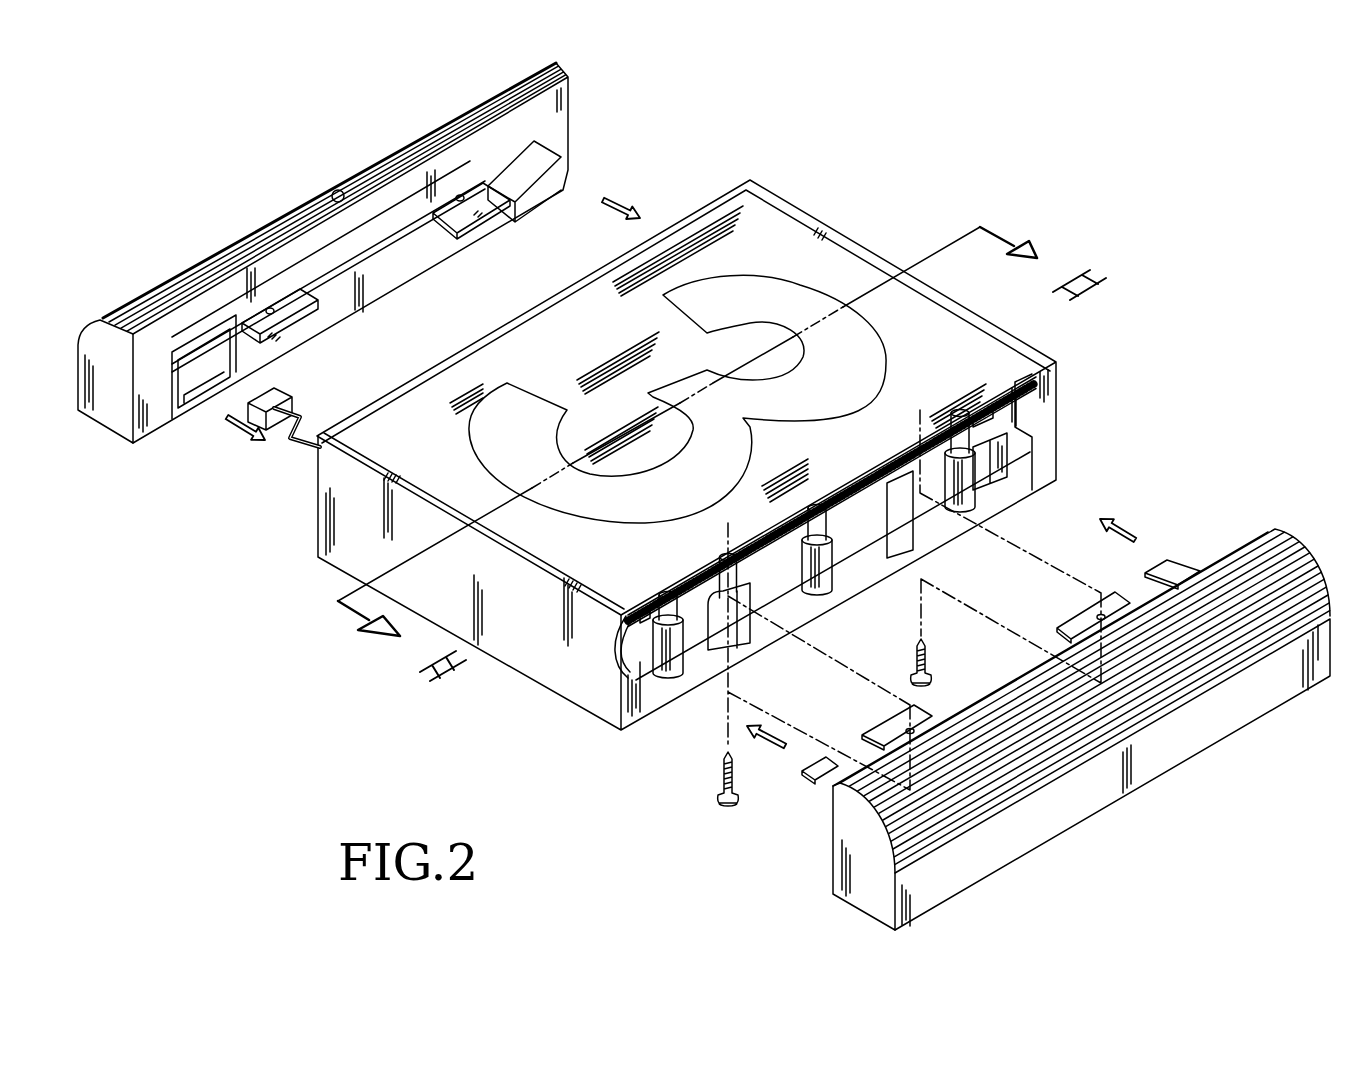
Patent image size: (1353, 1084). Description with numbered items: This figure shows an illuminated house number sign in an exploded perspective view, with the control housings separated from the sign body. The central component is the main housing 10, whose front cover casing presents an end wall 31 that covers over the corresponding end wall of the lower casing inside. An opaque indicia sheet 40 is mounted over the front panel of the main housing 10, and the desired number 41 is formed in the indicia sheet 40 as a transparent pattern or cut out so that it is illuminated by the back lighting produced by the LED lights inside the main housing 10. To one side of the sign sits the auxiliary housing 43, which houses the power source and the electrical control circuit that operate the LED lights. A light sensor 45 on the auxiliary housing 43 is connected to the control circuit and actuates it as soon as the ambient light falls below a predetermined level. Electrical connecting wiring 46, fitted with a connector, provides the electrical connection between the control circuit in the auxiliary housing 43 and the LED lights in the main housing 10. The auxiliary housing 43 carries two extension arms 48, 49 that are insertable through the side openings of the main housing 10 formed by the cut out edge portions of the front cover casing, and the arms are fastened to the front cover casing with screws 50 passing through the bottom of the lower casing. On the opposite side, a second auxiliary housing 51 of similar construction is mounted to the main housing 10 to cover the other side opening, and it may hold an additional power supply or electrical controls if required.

The main housing 10 is at (693, 438).
The end wall 31 is at (353, 545).
The indicia sheet 40 is at (826, 262).
The desired number 41 is at (740, 293).
The auxiliary housing 43 is at (362, 253).
The light sensor 45 is at (337, 189).
The electrical connecting wiring 46 is at (292, 455).
The extension arm 48 is at (480, 196).
The extension arm 49 is at (281, 313).
The screws 50 is at (930, 669).
The second auxiliary housing 51 is at (867, 888).